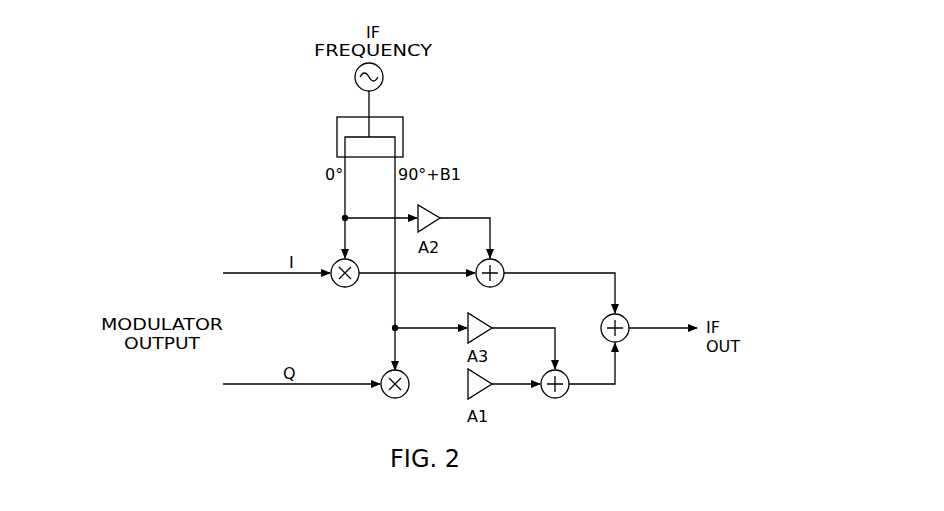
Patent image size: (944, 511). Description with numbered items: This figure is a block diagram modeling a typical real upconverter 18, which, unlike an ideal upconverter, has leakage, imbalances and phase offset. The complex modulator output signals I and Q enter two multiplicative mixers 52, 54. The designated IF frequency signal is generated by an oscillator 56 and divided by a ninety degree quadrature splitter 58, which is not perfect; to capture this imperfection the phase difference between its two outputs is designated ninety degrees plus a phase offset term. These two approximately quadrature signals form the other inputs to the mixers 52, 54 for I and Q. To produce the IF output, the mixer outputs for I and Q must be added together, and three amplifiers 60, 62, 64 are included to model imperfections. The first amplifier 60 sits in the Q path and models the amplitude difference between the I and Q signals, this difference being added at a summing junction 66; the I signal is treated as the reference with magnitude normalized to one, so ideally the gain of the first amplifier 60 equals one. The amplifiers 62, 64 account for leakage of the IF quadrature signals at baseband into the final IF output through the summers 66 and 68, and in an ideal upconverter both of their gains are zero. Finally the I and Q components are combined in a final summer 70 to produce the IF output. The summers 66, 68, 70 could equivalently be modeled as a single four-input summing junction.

The upconverter 18 is at (560, 100).
The multiplicative mixer 52 is at (334, 262).
The multiplicative mixer 54 is at (384, 374).
The oscillator 56 is at (385, 77).
The 90 degree (quadrature) splitter 58 is at (338, 138).
The first amplifier 60 is at (481, 378).
The amplifier 62 is at (481, 320).
The amplifier 64 is at (431, 210).
The summing junction 66 is at (563, 395).
The summer 68 is at (502, 262).
The final summer 70 is at (601, 328).